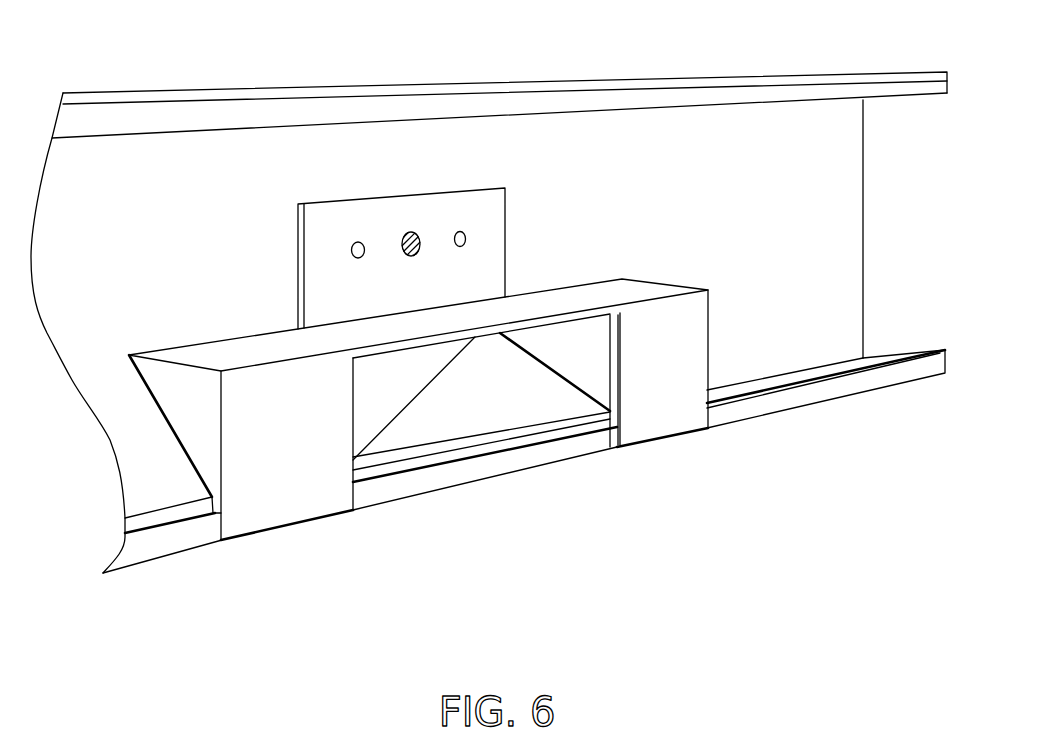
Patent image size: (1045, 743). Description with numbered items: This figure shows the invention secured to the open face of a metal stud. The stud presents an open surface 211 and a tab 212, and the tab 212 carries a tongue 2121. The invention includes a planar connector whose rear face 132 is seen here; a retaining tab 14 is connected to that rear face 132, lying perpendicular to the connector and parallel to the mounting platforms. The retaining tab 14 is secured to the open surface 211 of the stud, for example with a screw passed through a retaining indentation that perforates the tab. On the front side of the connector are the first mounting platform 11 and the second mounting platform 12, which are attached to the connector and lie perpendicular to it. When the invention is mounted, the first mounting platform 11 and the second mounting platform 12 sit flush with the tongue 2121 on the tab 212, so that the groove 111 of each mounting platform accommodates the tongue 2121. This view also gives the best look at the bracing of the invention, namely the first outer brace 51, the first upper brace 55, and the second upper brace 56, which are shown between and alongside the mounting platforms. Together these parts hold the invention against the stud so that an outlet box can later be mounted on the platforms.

The open surface 211 is at (157, 247).
The tab 212 is at (793, 382).
The tongue 2121 is at (503, 462).
The retaining tab 14 is at (379, 222).
The rear face 132 is at (555, 298).
The first mounting platform 11 is at (287, 463).
The groove 111 is at (213, 525).
The first outer brace 51 is at (195, 420).
The first upper brace 55 is at (398, 387).
The second upper brace 56 is at (568, 360).
The second mounting platform 12 is at (670, 393).